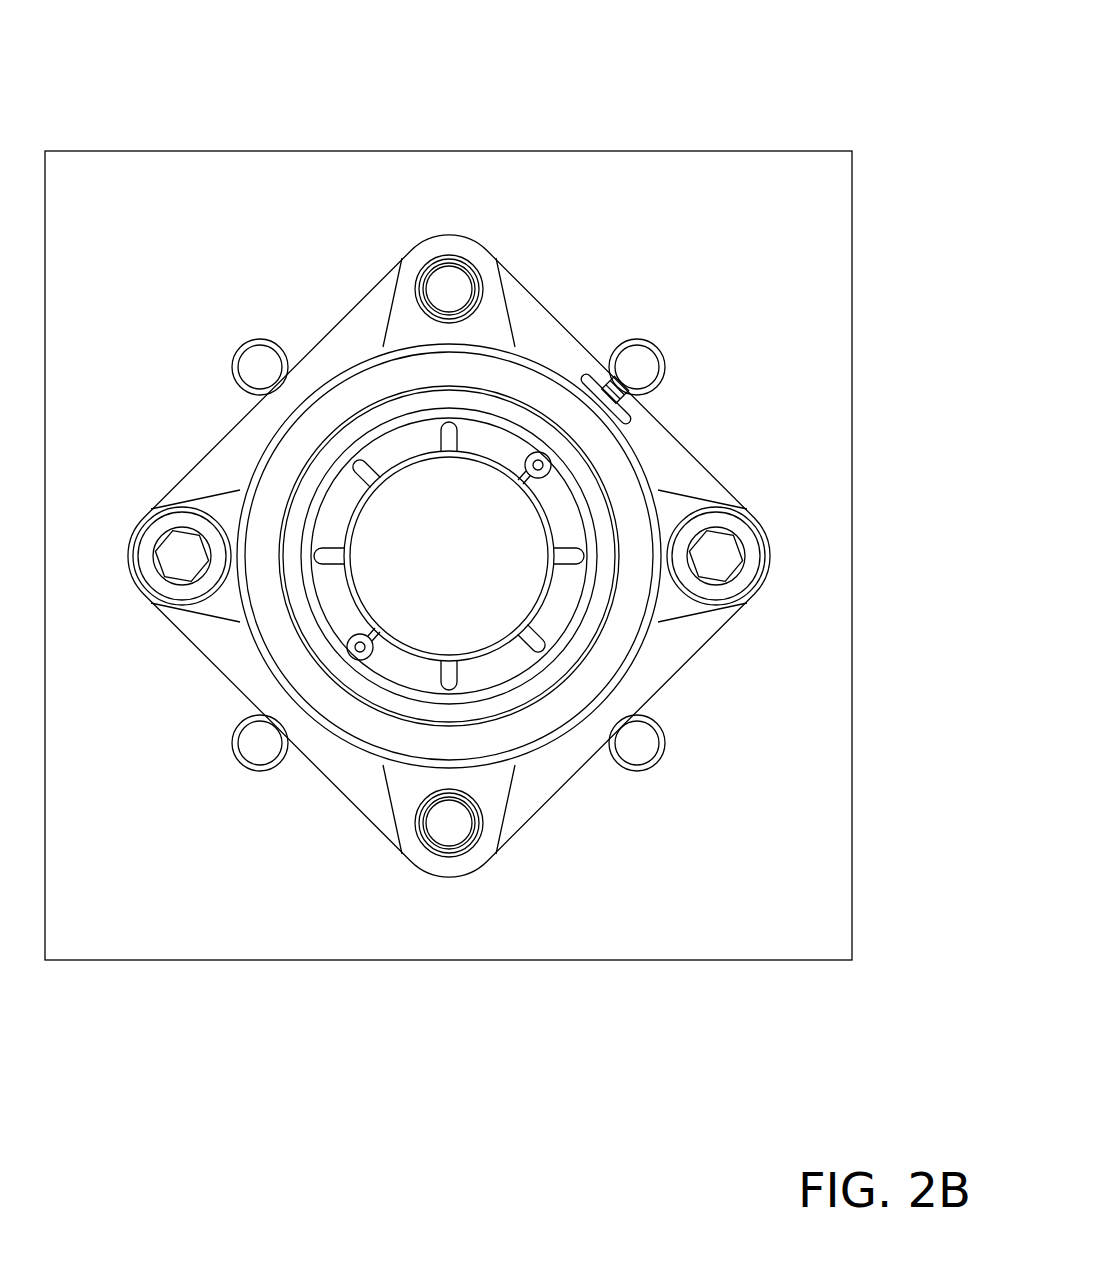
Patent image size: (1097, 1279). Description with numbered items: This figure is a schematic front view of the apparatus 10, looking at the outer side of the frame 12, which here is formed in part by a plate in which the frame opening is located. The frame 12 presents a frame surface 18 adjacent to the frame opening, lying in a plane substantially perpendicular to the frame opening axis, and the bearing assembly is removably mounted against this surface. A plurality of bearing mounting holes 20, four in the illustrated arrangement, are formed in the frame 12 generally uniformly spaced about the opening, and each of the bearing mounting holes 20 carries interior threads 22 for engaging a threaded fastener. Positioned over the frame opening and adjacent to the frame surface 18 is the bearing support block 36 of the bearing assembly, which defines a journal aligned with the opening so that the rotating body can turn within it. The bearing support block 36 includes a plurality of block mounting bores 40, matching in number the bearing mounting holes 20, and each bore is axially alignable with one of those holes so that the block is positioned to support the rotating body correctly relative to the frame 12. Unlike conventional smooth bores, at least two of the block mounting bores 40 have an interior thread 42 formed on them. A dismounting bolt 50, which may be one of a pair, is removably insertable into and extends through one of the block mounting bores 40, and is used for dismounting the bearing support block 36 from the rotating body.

The apparatus 10 is at (730, 84).
The frame 12 is at (555, 960).
The frame surface 18 is at (740, 648).
The bearing mounting holes 20 is at (657, 340).
The interior threads 22 is at (663, 367).
The bearing support block 36 is at (372, 290).
The block mounting bores 40 is at (449, 258).
The interior thread 42 is at (470, 265).
The dismounting bolt 50 is at (745, 508).